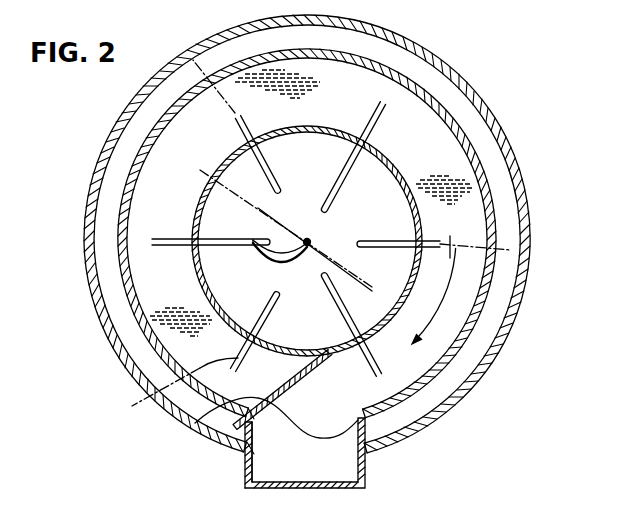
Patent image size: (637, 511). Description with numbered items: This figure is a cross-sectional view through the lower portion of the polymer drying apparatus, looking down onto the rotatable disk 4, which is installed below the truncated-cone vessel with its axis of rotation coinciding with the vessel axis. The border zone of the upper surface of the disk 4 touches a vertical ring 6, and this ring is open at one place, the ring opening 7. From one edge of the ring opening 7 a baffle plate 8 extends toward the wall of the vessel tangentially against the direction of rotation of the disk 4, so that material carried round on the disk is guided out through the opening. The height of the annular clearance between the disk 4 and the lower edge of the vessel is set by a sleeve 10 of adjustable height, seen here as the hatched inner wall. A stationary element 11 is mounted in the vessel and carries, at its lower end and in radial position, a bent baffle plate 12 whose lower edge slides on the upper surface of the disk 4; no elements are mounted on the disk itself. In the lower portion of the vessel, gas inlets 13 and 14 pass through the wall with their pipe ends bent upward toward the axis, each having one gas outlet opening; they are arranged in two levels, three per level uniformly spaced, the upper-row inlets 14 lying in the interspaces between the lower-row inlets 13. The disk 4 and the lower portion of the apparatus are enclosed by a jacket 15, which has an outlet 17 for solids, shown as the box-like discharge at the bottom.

The rotatable disk 4 is at (469, 218).
The vertical ring 6 is at (485, 188).
The ring opening 7 is at (325, 436).
The baffle plate 8 is at (267, 395).
The sleeve 10 is at (395, 172).
The stationary element 11 is at (233, 193).
The bent baffle plate 12 is at (266, 258).
The gas inlets of the lower row 13 is at (383, 108).
The gas inlets of the upper row 14 is at (193, 60).
The jacket 15 is at (524, 290).
The outlet for solids 17 is at (245, 470).